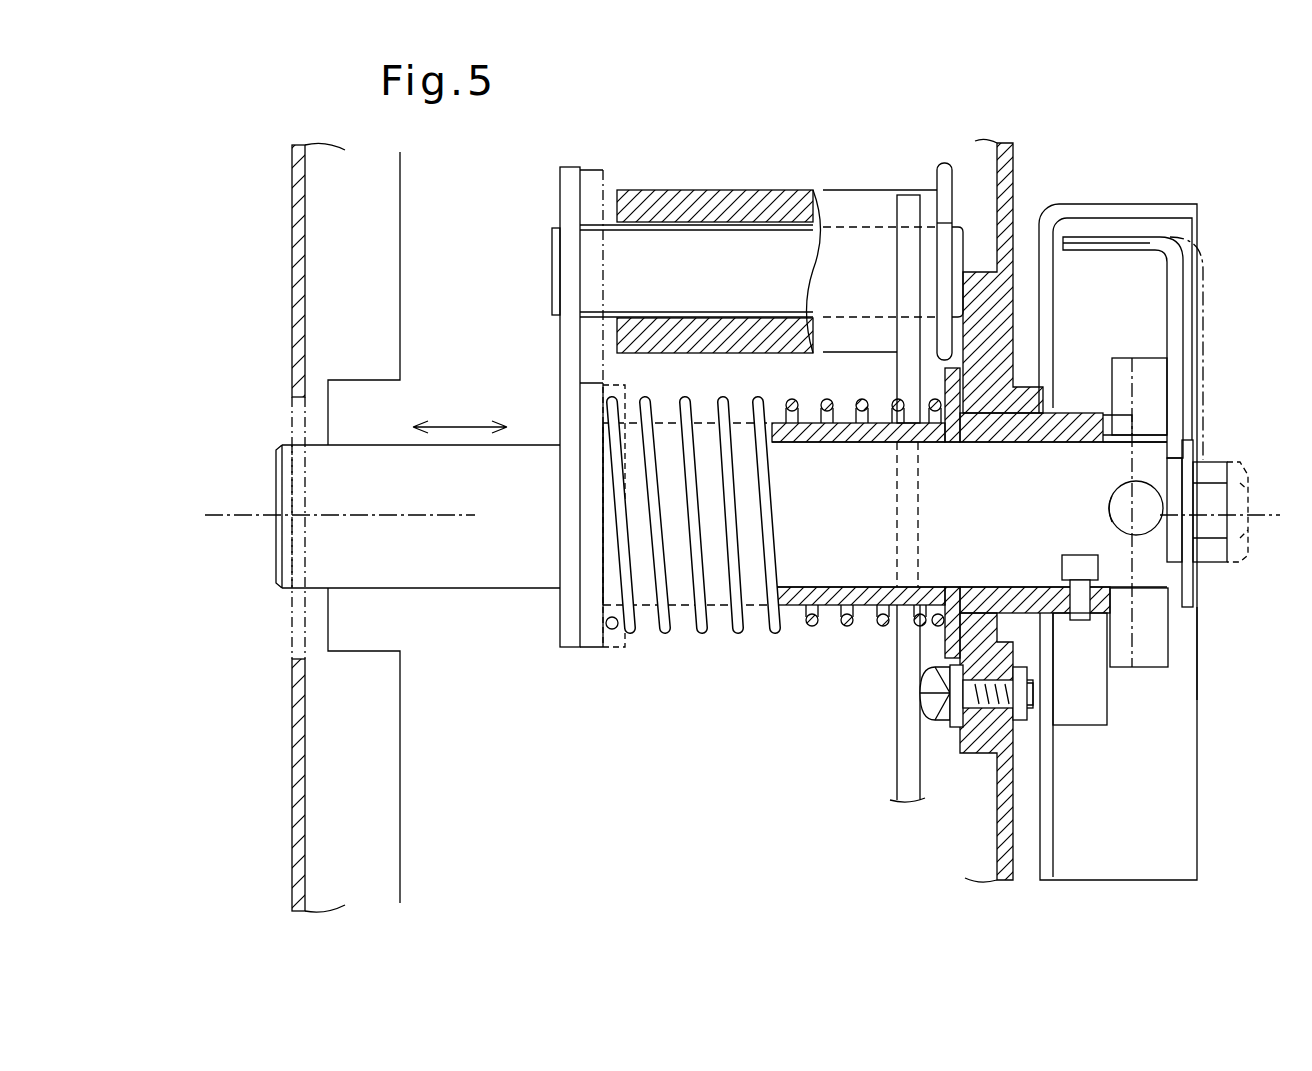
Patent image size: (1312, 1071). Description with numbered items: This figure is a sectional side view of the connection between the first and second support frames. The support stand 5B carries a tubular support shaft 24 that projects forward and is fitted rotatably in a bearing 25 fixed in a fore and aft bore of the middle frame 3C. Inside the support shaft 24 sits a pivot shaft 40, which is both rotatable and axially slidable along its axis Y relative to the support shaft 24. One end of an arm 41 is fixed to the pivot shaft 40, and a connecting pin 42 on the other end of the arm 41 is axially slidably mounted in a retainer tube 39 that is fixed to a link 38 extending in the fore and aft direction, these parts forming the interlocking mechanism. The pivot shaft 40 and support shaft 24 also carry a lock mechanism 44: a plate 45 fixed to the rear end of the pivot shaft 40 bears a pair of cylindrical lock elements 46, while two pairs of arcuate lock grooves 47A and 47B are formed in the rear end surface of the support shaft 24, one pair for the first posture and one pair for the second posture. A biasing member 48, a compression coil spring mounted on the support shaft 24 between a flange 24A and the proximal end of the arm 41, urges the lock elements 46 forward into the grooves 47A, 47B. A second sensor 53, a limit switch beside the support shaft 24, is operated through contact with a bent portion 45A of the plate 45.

The middle frame 3C is at (292, 712).
The support stand 5B is at (1172, 198).
The tubular support shaft 24 is at (807, 618).
The flange 24A is at (940, 648).
The bearing 25 is at (978, 752).
The link 38 is at (897, 762).
The retainer tube 39 is at (722, 192).
The pivot shaft 40 is at (501, 570).
The arm 41 is at (565, 342).
The connecting pin 42 is at (620, 265).
The lock mechanism 44 is at (1162, 707).
The plate 45 is at (1178, 292).
The bent portion 45A is at (1104, 243).
The lock elements 46 is at (1153, 392).
The lock grooves 47A is at (1120, 425).
The lock grooves 47B is at (1110, 500).
The biasing member 48 is at (702, 620).
The second sensor 53 is at (1087, 727).
The axis Y is at (258, 510).